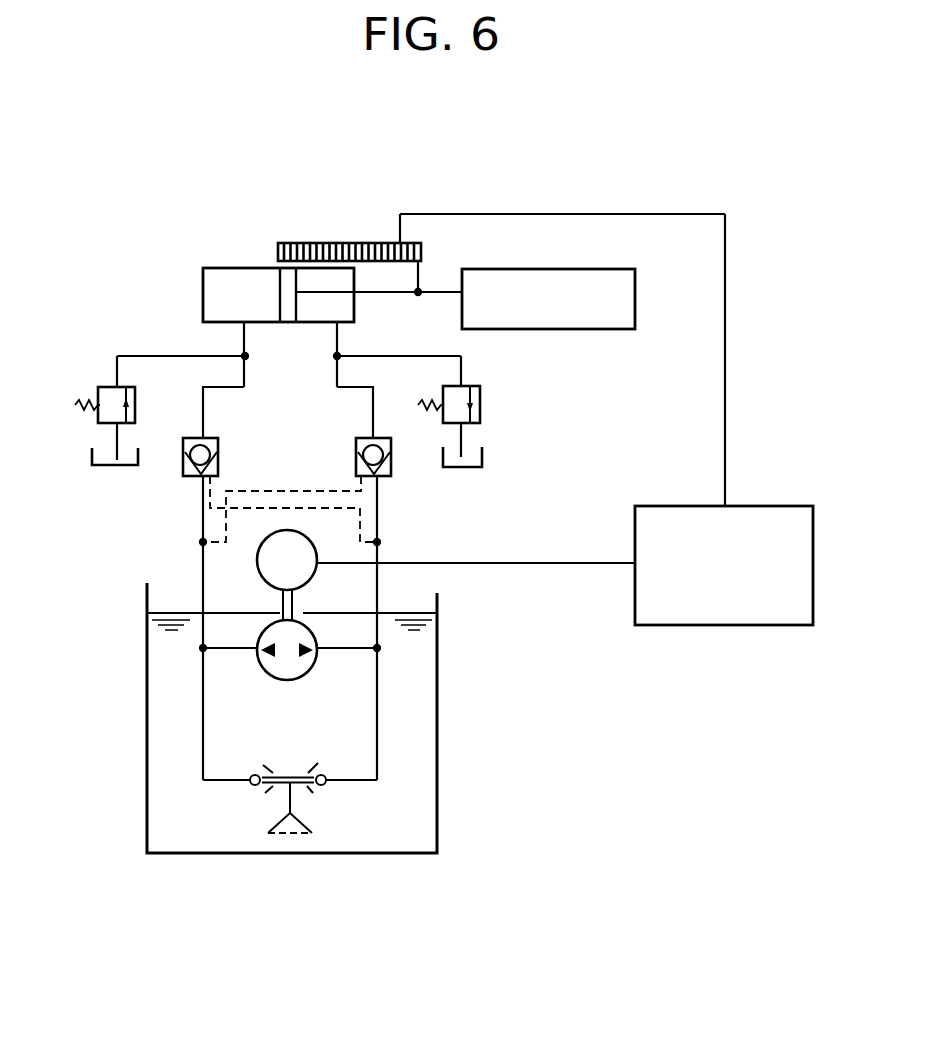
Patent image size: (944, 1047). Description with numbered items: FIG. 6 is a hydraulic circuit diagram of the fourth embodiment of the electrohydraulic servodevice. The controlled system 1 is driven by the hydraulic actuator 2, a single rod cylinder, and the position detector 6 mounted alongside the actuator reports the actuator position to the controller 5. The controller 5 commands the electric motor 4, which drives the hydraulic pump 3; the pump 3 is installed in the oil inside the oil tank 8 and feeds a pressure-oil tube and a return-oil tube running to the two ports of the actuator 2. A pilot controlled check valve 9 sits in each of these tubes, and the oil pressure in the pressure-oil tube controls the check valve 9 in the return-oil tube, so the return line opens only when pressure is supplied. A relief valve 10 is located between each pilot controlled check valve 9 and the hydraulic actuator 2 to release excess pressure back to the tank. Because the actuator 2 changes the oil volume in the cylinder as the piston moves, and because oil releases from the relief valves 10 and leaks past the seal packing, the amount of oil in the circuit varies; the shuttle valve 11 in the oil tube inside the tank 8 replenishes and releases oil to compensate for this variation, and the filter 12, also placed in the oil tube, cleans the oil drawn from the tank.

The controlled system 1 is at (635, 298).
The hydraulic actuator 2 is at (243, 268).
The hydraulic pump 3 is at (270, 672).
The electric motor 4 is at (258, 582).
The controller 5 is at (770, 506).
The position detector 6 is at (348, 243).
The oil tank 8 is at (438, 722).
The pilot controlled check valve 9 is at (392, 462).
The relief valve 10 is at (480, 400).
The shuttle valve 11 is at (321, 787).
The filter 12 is at (277, 835).